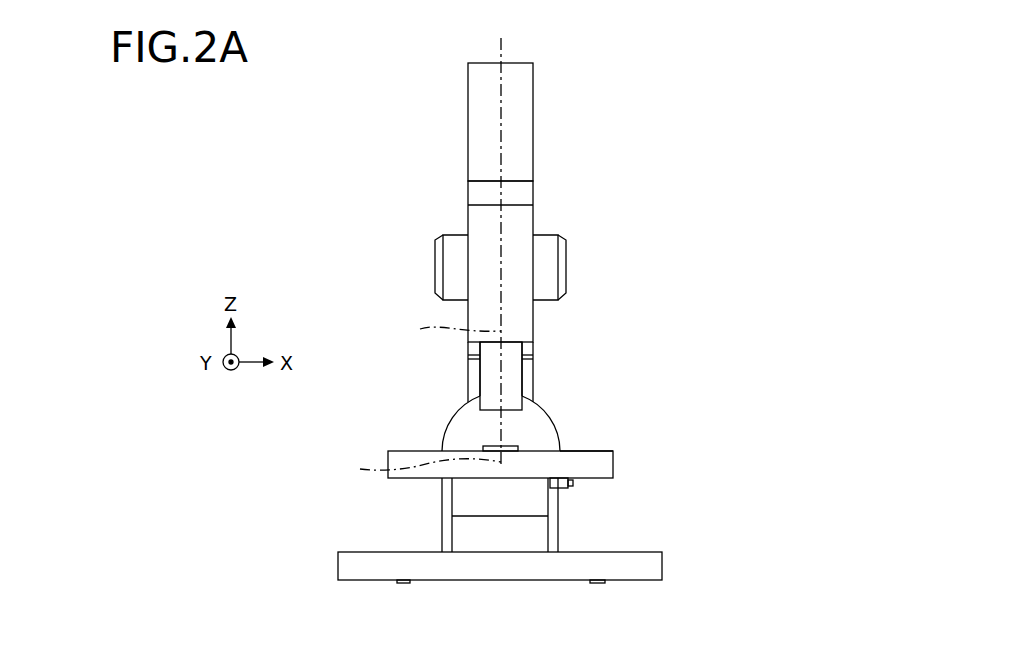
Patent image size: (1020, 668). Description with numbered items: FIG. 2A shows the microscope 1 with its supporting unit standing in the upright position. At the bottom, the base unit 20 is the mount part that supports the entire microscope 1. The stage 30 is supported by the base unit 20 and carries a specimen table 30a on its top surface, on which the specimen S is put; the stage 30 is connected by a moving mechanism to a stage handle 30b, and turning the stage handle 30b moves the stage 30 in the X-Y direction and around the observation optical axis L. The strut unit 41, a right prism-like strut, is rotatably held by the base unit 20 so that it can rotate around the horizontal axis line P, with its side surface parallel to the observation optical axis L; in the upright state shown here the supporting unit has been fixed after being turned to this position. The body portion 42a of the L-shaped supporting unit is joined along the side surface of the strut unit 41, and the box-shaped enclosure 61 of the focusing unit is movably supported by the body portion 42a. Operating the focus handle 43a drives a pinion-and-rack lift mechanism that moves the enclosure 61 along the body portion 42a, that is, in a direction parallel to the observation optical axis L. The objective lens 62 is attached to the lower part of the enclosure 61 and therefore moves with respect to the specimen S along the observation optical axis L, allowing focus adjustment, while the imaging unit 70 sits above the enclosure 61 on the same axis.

The microscope 1 is at (562, 49).
The imaging unit 70 is at (517, 135).
The enclosure 61 is at (468, 220).
The focus handle 43a is at (548, 268).
The body portion 42a is at (527, 347).
The strut unit 41 is at (478, 375).
The objective lens 62 is at (510, 366).
The observation optical axis L is at (452, 330).
The specimen S is at (487, 445).
The stage 30 is at (603, 466).
The specimen table 30a is at (599, 449).
The stage handle 30b is at (573, 481).
The horizontal axis line P is at (419, 468).
The base unit 20 is at (523, 535).